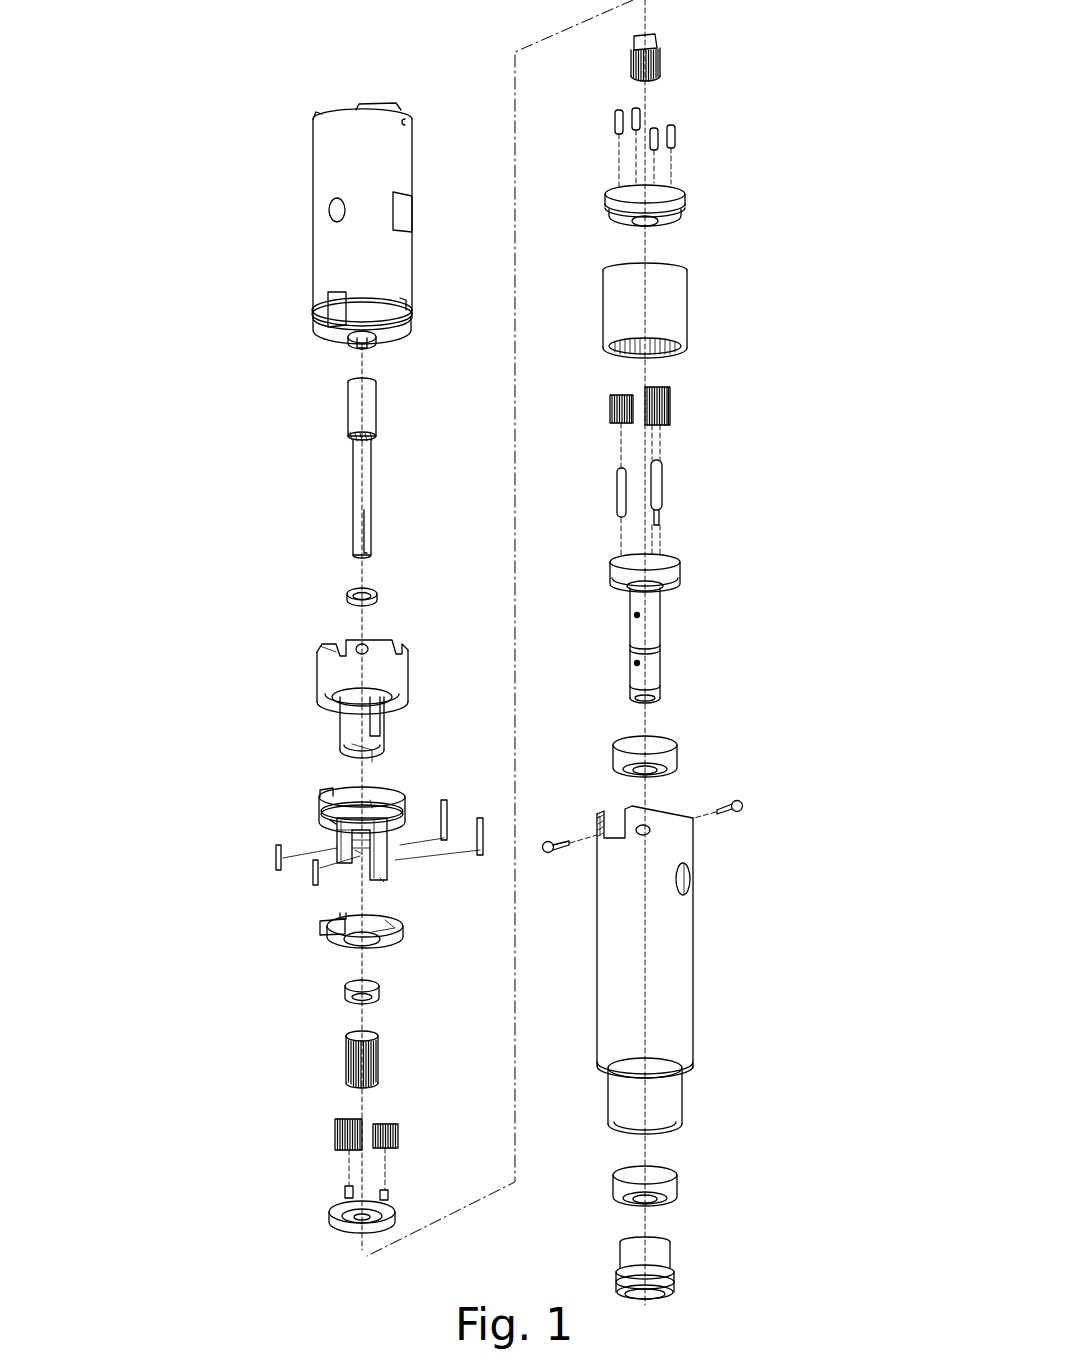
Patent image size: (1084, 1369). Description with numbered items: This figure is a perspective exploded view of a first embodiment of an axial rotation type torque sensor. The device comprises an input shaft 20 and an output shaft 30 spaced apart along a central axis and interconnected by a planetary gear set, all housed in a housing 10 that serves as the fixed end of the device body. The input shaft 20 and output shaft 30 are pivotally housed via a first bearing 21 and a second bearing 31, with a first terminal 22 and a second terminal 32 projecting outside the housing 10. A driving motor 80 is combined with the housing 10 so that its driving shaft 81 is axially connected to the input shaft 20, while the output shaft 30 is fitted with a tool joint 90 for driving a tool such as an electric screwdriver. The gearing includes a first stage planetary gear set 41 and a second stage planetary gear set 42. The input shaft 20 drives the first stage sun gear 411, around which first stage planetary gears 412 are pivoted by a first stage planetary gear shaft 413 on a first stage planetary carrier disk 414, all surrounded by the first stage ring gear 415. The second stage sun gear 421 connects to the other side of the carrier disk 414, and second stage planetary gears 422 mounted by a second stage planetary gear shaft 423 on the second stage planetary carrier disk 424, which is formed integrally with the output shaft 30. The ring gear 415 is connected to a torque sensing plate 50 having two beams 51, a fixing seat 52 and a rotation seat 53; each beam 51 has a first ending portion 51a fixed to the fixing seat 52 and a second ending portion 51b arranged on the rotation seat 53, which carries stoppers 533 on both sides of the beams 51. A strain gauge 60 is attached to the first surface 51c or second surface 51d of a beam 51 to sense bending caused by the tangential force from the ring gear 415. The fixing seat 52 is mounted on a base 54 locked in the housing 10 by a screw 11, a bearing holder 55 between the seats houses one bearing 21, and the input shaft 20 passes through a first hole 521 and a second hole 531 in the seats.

The housing 10 is at (680, 940).
The screw 11 is at (740, 815).
The input shaft 20 is at (358, 474).
The first bearing 21 is at (346, 597).
The first terminal 22 is at (375, 386).
The output shaft 30 is at (635, 630).
The second bearing 31 is at (678, 752).
The second terminal 32 is at (656, 708).
The first stage planetary gear set 41 is at (330, 1096).
The second stage planetary gear set 42 is at (684, 482).
The torque sensing plate 50 is at (336, 782).
The beam 51 is at (388, 858).
The first ending portion 51a is at (330, 824).
The second ending portion 51b is at (385, 878).
The first surface 51c is at (326, 856).
The second surface 51d is at (360, 862).
The fixing seat 52 is at (322, 804).
The rotation seat 53 is at (606, 200).
The base 54 is at (400, 672).
The bearing holder 55 is at (396, 942).
The strain gauge 60 is at (450, 810).
The driving motor 80 is at (328, 178).
The driving shaft 81 is at (362, 350).
The tool joint 90 is at (672, 1254).
The first stage sun gear 411 is at (380, 1068).
The first stage planetary gears 412 is at (400, 1135).
The first stage planetary gear shaft 413 is at (344, 1193).
The first stage planetary carrier disk 414 is at (330, 1214).
The first stage ring gear 415 is at (678, 302).
The second stage sun gear 421 is at (664, 62).
The second stage planetary gears 422 is at (608, 404).
The second stage planetary gear shaft 423 is at (614, 496).
The second stage planetary carrier disk 424 is at (682, 572).
The first hole 521 is at (372, 806).
The second hole 531 is at (650, 225).
The stoppers 533 is at (680, 136).